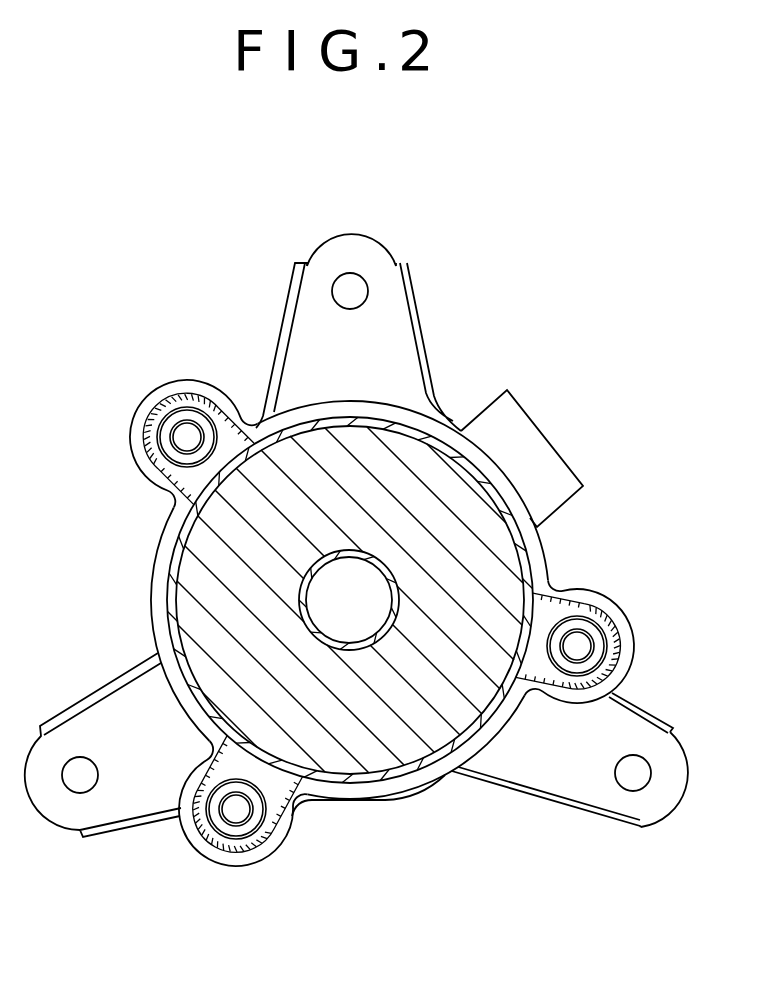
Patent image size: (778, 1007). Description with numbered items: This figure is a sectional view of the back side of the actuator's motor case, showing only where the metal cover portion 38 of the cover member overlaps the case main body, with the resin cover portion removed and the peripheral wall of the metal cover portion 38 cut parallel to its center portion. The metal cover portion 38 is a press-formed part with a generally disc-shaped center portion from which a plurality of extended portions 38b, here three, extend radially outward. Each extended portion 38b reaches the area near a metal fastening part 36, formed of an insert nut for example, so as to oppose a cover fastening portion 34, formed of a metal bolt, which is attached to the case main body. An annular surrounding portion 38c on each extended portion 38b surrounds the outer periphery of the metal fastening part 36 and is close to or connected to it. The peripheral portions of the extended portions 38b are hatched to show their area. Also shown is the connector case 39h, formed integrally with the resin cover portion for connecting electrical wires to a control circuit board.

The cover fastening portion 34 is at (213, 855).
The metal fastening part 36 is at (165, 445).
The metal cover portion 38 is at (413, 772).
The extended portion 38b is at (152, 422).
The surrounding portion 38c is at (168, 476).
The connector case 39h is at (517, 428).